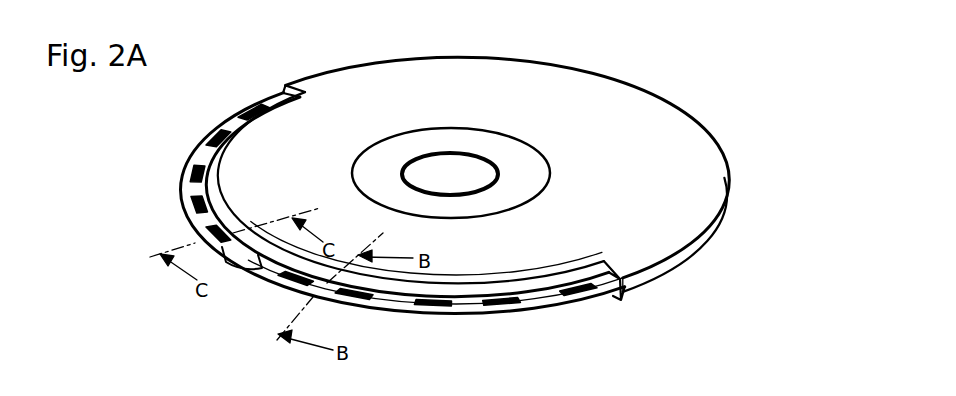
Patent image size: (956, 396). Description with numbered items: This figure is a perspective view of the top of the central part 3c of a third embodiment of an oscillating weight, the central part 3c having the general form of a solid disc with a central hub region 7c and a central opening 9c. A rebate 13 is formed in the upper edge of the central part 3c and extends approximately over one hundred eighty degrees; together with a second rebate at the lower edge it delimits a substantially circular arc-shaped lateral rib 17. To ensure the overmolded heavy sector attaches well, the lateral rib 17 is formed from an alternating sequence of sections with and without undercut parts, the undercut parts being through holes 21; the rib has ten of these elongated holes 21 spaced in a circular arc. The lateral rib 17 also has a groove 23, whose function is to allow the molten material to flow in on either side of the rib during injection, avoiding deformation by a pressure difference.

The central part 3c is at (732, 170).
The hub portion 7c is at (520, 140).
The center hole 9c is at (376, 163).
The rebate 13 is at (225, 186).
The lateral rib 17 is at (540, 307).
The through holes 21 is at (263, 110).
The groove 23 is at (250, 266).